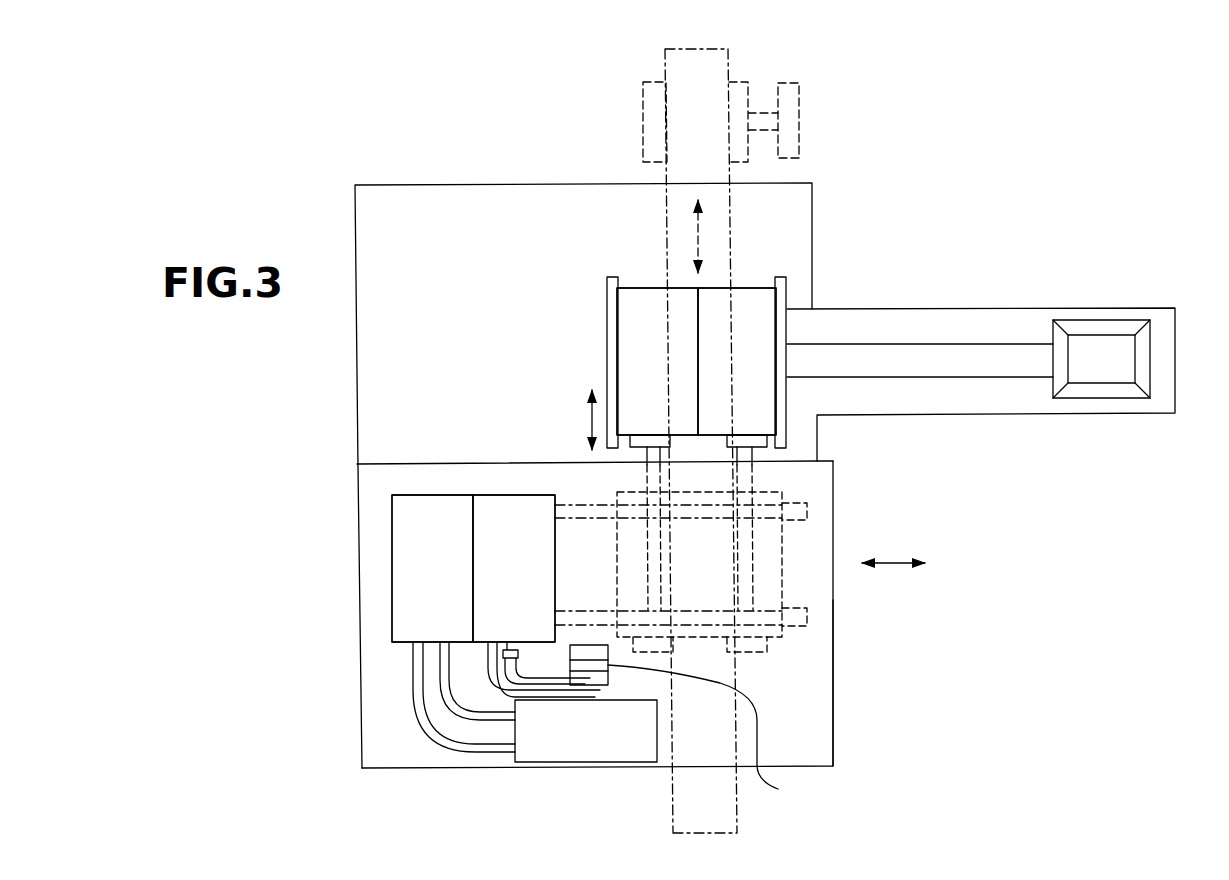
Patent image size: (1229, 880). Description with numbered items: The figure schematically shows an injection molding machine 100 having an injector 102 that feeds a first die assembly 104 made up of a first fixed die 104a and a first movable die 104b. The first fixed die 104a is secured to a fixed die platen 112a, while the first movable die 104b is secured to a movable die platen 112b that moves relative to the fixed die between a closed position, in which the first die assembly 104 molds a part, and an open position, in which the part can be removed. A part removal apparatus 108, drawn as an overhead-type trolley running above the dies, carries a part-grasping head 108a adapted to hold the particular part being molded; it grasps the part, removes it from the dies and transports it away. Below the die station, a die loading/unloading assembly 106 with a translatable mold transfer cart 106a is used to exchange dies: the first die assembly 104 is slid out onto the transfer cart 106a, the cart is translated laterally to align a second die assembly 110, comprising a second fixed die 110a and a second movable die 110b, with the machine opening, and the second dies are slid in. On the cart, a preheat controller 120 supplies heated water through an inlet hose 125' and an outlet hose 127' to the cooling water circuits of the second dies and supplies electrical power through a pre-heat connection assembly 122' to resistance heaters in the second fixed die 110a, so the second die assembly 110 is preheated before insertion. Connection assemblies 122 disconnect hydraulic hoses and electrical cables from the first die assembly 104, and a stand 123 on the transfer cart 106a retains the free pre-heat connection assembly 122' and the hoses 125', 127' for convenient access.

The injection molding machine 100 is at (853, 161).
The injector 102 is at (1007, 290).
The first die assembly 104 is at (736, 311).
The first fixed die 104a is at (767, 318).
The first movable die 104b is at (648, 305).
The die loading/unloading assembly 106 is at (850, 520).
The mold transfer cart 106a is at (805, 657).
The part removal apparatus 108 is at (733, 49).
The part-grasping head 108a is at (799, 100).
The second die assembly 110 is at (404, 534).
The second fixed die 110a is at (517, 528).
The second movable die 110b is at (410, 610).
The fixed die platen 112a is at (788, 331).
The movable die platen 112b is at (607, 291).
The preheat controller 120 is at (608, 762).
The connection assemblies 122 is at (635, 486).
The pre-heat connection assembly 122' is at (591, 578).
The stand 123 is at (715, 735).
The inlet hose 125' is at (582, 746).
The outlet hose 127' is at (449, 706).